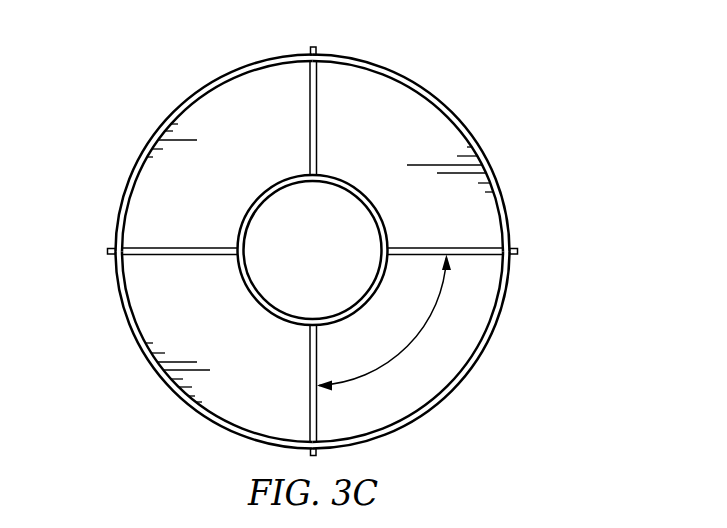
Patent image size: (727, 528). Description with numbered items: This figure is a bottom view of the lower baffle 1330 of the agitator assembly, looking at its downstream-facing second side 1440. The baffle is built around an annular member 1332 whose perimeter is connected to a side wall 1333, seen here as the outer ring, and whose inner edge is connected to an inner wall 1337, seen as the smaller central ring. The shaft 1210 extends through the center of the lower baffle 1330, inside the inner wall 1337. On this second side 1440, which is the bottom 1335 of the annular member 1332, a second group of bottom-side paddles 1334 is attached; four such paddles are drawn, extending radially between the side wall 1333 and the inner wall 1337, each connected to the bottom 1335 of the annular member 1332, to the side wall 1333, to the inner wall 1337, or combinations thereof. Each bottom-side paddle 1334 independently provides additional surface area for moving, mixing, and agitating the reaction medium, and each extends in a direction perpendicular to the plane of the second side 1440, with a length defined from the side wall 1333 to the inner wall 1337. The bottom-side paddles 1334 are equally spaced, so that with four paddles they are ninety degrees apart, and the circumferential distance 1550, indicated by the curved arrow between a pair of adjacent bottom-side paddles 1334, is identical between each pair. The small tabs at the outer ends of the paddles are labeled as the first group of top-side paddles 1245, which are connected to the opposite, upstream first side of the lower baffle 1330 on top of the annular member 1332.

The lower baffle 1330 is at (119, 71).
The side wall 1333 is at (470, 127).
The second side 1440 is at (393, 107).
The bottom of the annular member 1335 is at (467, 315).
The annular member 1332 is at (162, 330).
The bottom-side paddles 1334 is at (297, 87).
The top-side paddles 1245 is at (316, 47).
The inner wall 1337 is at (283, 180).
The shaft 1210 is at (278, 230).
The circumferential distance 1550 is at (407, 350).